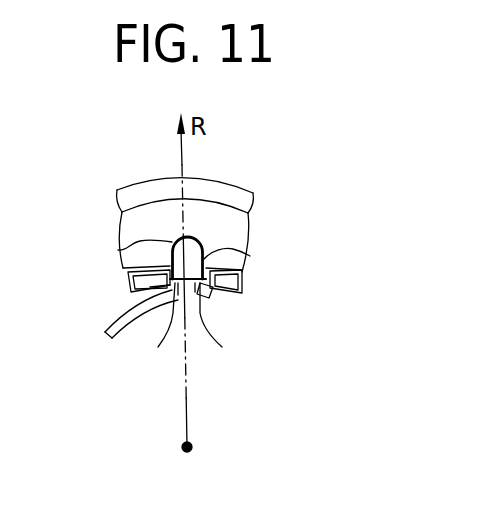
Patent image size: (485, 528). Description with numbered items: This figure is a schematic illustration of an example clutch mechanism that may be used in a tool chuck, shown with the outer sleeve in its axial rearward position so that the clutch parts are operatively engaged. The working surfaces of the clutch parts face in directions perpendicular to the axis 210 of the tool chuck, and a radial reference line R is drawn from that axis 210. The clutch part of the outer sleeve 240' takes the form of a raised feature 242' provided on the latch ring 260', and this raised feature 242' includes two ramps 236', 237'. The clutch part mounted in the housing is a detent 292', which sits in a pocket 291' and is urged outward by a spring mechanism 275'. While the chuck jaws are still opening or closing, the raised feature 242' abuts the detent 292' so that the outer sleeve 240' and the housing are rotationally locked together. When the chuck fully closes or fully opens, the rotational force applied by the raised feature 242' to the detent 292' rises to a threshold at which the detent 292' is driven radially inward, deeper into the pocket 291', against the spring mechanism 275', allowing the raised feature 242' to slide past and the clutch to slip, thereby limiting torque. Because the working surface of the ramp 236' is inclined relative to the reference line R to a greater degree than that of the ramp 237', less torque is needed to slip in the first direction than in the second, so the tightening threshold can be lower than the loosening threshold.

The axis 210 is at (192, 446).
The ramp 236' is at (268, 267).
The ramp 237' is at (111, 262).
The outer sleeve 240' is at (216, 176).
The raised feature 242' is at (107, 191).
The latch ring 260' is at (243, 235).
The spring mechanism 275' is at (107, 308).
The pocket 291' is at (233, 324).
The detent 292' is at (151, 333).